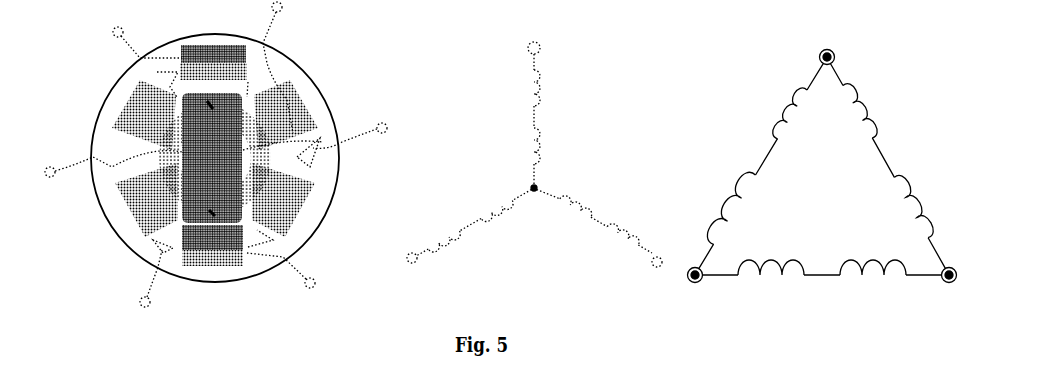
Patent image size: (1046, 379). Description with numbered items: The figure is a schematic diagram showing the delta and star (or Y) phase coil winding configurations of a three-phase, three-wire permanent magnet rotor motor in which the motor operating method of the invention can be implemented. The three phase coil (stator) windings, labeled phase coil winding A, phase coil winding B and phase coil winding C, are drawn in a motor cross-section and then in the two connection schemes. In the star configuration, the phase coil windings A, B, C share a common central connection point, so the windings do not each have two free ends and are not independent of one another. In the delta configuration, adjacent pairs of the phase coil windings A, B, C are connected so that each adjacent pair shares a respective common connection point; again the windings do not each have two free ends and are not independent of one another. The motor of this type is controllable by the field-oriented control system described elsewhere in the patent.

The phase coil winding A is at (779, 237).
The phase coil winding B is at (93, 76).
The phase coil winding C is at (320, 67).